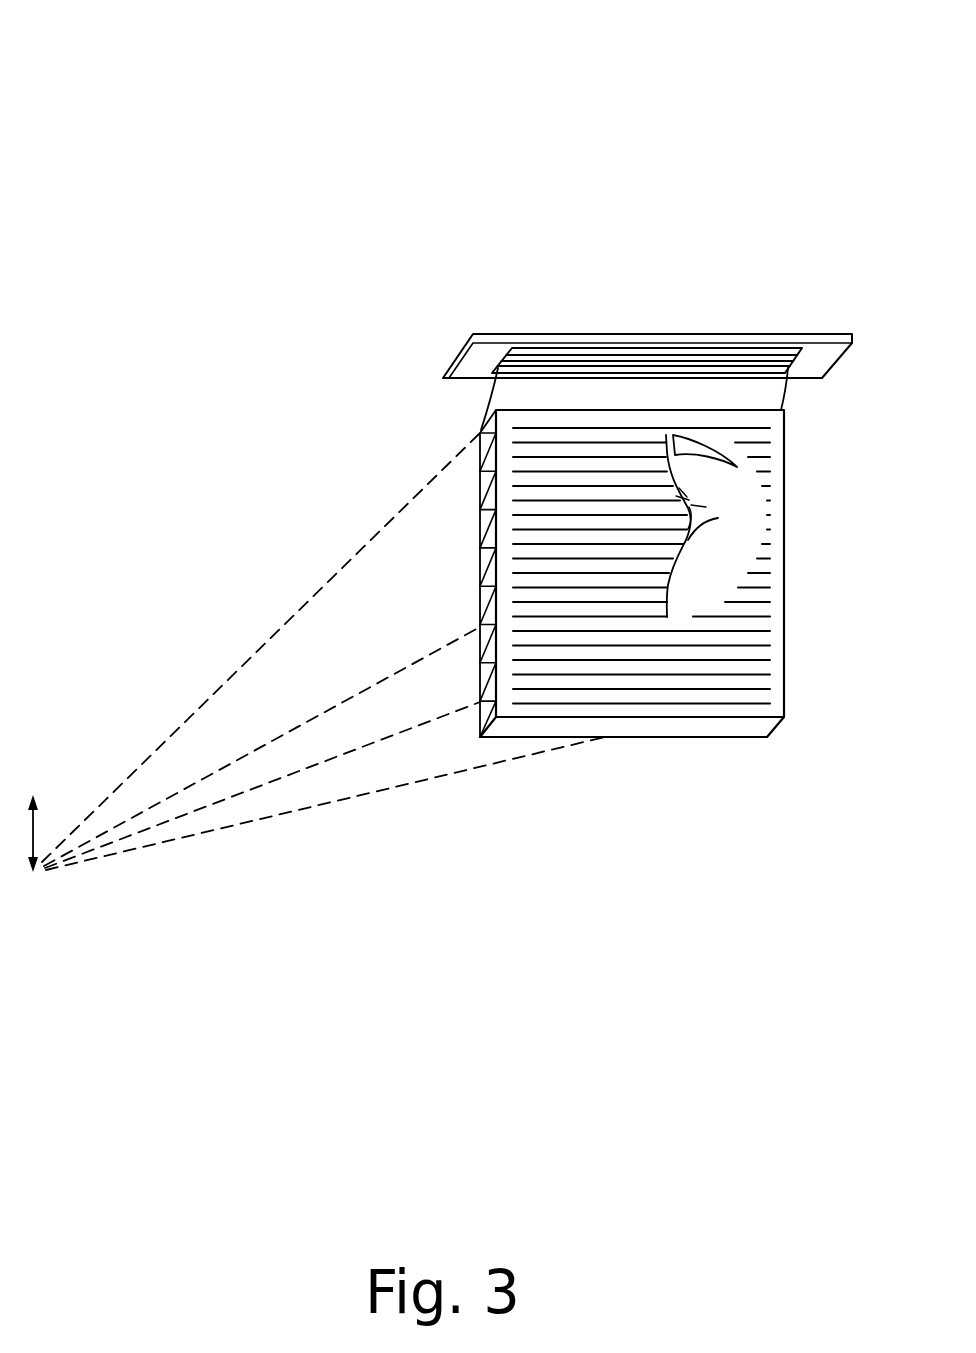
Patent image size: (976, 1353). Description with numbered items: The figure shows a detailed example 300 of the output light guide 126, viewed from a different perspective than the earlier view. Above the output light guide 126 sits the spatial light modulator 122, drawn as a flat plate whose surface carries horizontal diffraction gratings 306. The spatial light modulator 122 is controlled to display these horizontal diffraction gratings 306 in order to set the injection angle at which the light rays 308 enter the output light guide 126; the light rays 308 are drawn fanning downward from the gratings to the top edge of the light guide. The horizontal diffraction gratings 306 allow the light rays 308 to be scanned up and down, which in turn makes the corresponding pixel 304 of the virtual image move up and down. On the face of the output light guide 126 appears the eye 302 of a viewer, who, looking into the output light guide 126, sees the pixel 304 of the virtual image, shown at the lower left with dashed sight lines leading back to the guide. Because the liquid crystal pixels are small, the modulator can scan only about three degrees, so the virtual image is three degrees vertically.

The detailed example of output light guide 300 is at (110, 48).
The spatial light modulator 122 is at (434, 334).
The horizontal diffraction gratings 306 is at (613, 347).
The light rays 308 is at (494, 410).
The output light guide 126 is at (693, 766).
The eye 302 is at (744, 504).
The pixel 304 is at (33, 874).